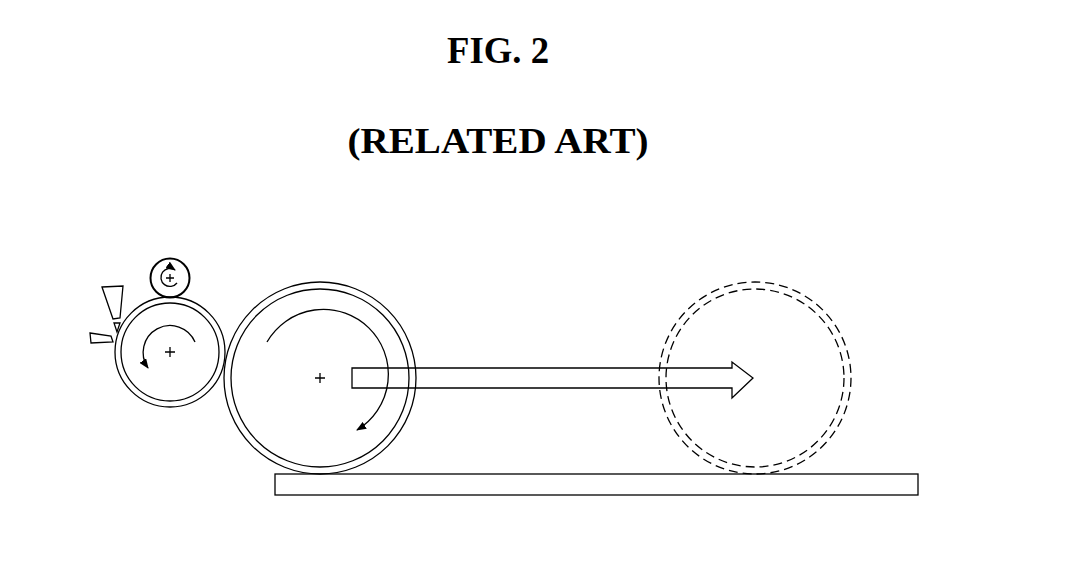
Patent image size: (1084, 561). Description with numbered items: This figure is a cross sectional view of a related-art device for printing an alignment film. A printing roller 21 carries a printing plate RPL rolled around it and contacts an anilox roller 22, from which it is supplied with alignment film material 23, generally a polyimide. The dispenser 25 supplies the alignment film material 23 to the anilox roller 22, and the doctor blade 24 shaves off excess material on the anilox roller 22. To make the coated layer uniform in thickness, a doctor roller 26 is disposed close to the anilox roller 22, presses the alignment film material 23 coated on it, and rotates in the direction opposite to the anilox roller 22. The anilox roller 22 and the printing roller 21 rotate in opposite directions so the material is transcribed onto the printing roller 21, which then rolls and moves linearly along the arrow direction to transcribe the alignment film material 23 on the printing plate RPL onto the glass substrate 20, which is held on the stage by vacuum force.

The glass substrate 20 is at (417, 483).
The printing roller 21 is at (537, 351).
The printing plate RPL is at (363, 288).
The anilox roller 22 is at (157, 385).
The alignment film material 23 is at (198, 308).
The doctor blade 24 is at (95, 344).
The dispenser 25 is at (113, 287).
The doctor roller 26 is at (175, 262).